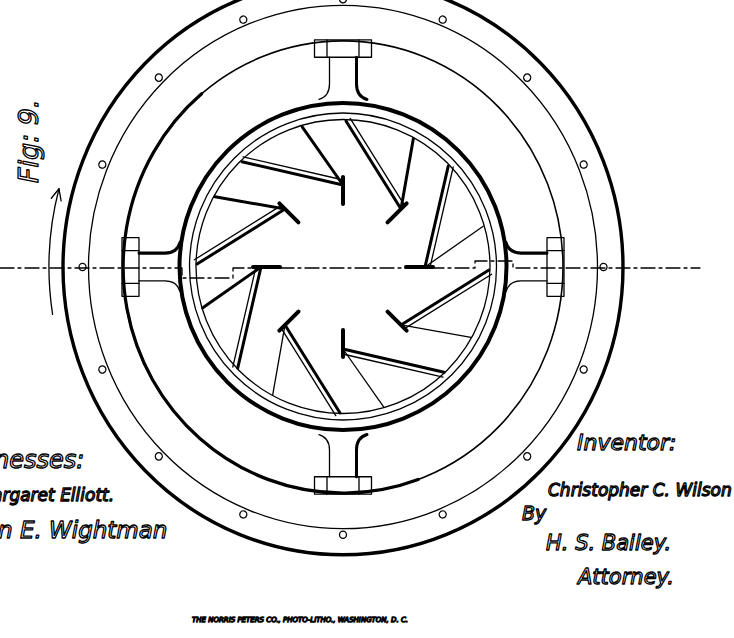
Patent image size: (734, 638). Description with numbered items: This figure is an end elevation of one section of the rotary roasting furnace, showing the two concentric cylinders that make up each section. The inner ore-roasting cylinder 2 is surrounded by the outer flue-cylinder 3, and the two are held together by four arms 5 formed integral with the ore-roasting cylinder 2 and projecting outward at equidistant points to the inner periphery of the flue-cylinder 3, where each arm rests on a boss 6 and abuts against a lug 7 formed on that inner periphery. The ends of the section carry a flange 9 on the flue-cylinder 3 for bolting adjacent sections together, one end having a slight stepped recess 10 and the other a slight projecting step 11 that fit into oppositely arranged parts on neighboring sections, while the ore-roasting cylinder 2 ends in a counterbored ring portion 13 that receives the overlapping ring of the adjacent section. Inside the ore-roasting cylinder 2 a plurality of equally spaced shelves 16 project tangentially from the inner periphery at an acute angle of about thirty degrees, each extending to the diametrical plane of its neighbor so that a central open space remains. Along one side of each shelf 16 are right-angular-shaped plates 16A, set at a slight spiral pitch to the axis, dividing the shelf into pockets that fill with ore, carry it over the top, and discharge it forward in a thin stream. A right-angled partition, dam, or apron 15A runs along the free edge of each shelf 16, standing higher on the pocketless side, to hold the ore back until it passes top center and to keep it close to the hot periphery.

The ore-roasting cylinder 2 is at (260, 150).
The flue-cylinder 3 is at (482, 456).
The arms 5 is at (328, 82).
The bosses 6 is at (330, 46).
The lugs 7 is at (368, 61).
The flange 9 is at (107, 122).
The stepped recess 10 is at (350, 270).
The projecting step 11 is at (567, 137).
The counterbored ring portion 13 is at (472, 162).
The right-angled partition, dam, or apron 15A is at (387, 221).
The shelves 16 is at (313, 188).
The right-angular-shaped plates 16A is at (426, 232).